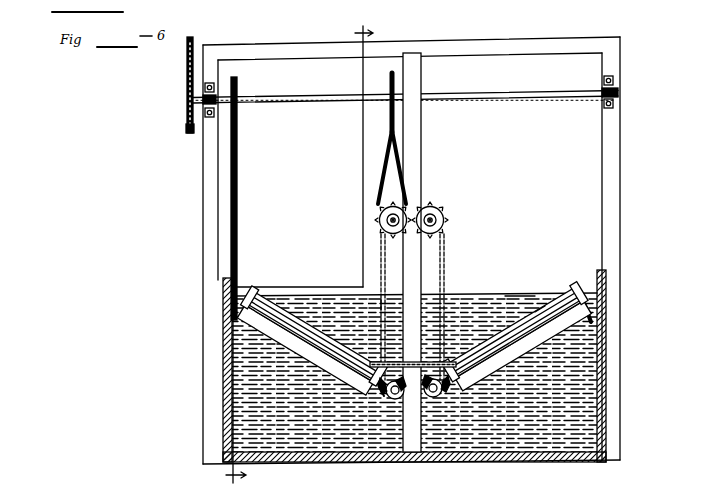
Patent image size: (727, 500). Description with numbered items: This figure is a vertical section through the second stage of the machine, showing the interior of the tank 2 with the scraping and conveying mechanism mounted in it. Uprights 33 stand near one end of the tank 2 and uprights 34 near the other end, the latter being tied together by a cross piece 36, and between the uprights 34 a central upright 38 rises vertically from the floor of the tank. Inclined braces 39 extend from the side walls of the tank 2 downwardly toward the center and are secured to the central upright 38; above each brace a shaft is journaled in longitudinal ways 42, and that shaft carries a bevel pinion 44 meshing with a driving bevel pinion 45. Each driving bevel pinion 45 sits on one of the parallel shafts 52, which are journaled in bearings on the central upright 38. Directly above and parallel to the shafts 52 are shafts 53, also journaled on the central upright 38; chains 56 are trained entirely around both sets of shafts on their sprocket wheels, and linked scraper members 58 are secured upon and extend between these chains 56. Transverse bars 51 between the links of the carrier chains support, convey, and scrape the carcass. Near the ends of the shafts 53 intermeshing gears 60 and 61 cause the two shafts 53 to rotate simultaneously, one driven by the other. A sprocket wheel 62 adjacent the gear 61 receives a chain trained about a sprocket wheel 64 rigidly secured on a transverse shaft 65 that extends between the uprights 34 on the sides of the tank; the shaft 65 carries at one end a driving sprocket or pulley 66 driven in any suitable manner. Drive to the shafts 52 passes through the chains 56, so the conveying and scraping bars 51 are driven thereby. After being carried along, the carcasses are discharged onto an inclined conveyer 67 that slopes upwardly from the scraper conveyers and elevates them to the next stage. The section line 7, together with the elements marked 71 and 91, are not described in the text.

The tank 2 is at (604, 372).
The section line 7- 7 is at (296, 255).
The uprights 33 is at (310, 341).
The uprights 34 is at (214, 236).
The cross piece 36 is at (524, 44).
The central upright 38 is at (412, 157).
The braces 39 is at (517, 337).
The longitudinal ways 42 is at (222, 313).
The bevel pinion 44 is at (370, 397).
The driving bevel pinion 45 is at (391, 401).
The bars 51 is at (540, 310).
The shafts 52 is at (437, 400).
The shafts 53 is at (388, 220).
The chains 56 is at (381, 266).
The linked scraper members 58 is at (446, 270).
The gear 60 is at (448, 221).
The gear 61 is at (378, 210).
The sprocket wheel 62 is at (380, 246).
The sprocket wheel 64 is at (391, 107).
The transverse shaft 65 is at (334, 101).
The driving sprocket or pulley 66 is at (189, 129).
The inclined conveyer 67 is at (507, 286).
The cross connecting bar 71 is at (427, 382).
The slotted adjusting bar 91 is at (186, 60).